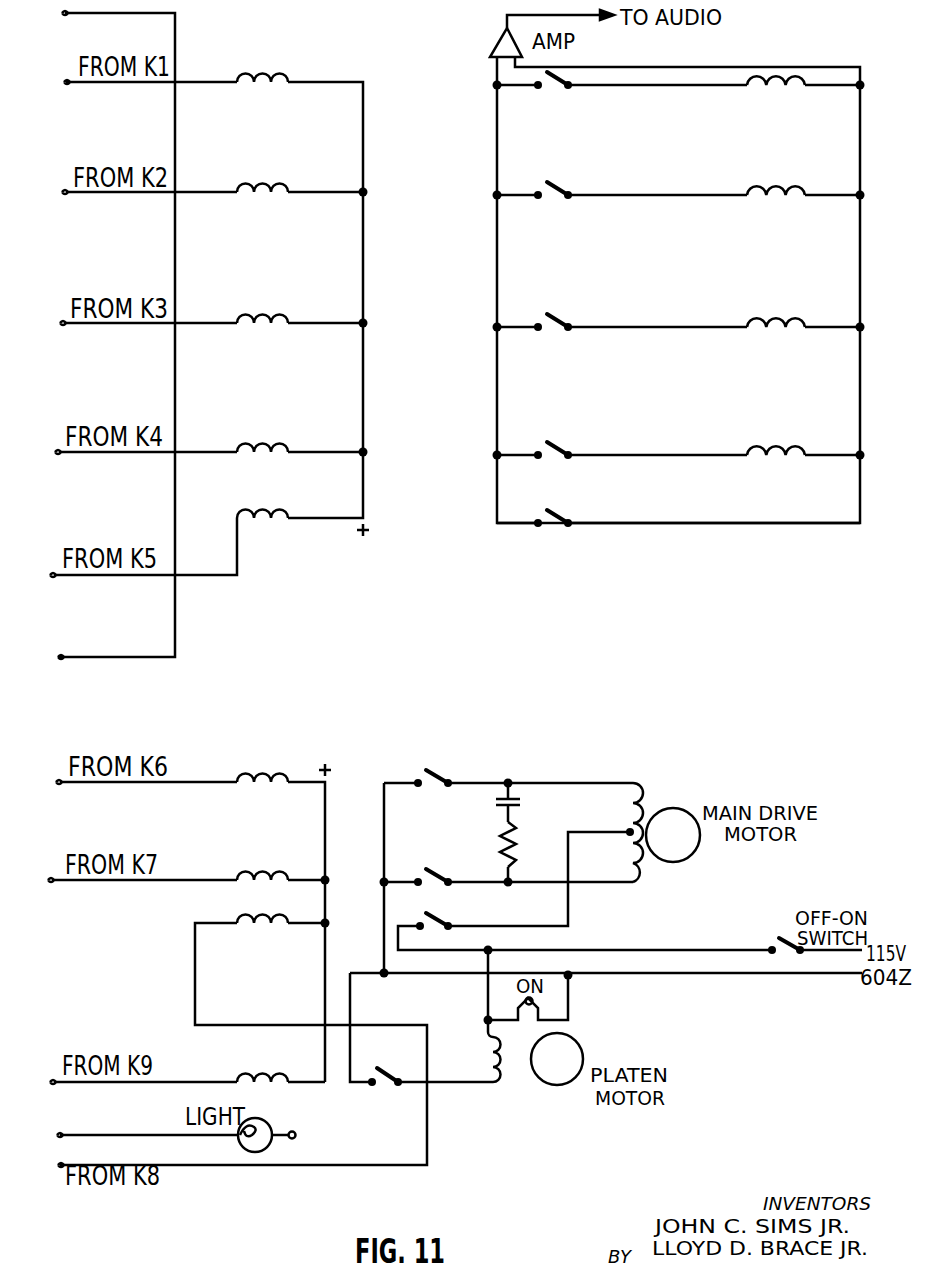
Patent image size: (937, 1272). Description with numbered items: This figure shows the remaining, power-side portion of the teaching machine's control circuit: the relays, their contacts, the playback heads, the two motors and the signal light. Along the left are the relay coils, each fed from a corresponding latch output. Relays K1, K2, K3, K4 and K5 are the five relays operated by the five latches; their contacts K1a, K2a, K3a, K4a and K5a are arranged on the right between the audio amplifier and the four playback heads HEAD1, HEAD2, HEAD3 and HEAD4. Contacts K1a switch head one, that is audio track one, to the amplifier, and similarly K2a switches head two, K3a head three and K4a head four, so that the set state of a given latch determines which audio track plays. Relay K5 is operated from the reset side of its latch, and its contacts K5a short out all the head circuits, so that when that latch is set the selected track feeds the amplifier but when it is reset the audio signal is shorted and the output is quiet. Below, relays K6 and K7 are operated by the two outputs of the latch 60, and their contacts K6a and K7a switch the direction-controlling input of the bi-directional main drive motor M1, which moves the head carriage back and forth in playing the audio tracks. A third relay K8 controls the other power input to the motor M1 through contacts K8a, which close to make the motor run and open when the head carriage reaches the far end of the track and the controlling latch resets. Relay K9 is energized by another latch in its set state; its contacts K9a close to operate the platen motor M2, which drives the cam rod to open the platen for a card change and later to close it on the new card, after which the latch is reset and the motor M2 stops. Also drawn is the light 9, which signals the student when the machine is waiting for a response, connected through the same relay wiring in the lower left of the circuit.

The relay K1 is at (262, 66).
The relay K2 is at (262, 176).
The relay K3 is at (262, 304).
The relay K4 is at (262, 436).
The relay K5 is at (262, 500).
The relay K6 is at (262, 764).
The relay K7 is at (262, 863).
The relay K8 is at (262, 906).
The relay K9 is at (262, 1064).
The relay contacts K1a is at (556, 84).
The relay contacts K2a is at (558, 189).
The relay contacts K3a is at (557, 321).
The relay contacts K4a is at (557, 449).
The relay contacts K5a is at (557, 517).
The relay contacts K6a is at (431, 775).
The relay contacts K7a is at (431, 873).
The relay contacts K8a is at (433, 918).
The relay contacts K9a is at (386, 1076).
The head one HEAD1 is at (777, 101).
The head two HEAD2 is at (783, 178).
The head three HEAD3 is at (784, 310).
The head four HEAD4 is at (783, 439).
The main drive motor M1 is at (674, 861).
The platen motor M2 is at (575, 1047).
The latch 60 is at (206, 1127).
The light 9 is at (292, 1121).